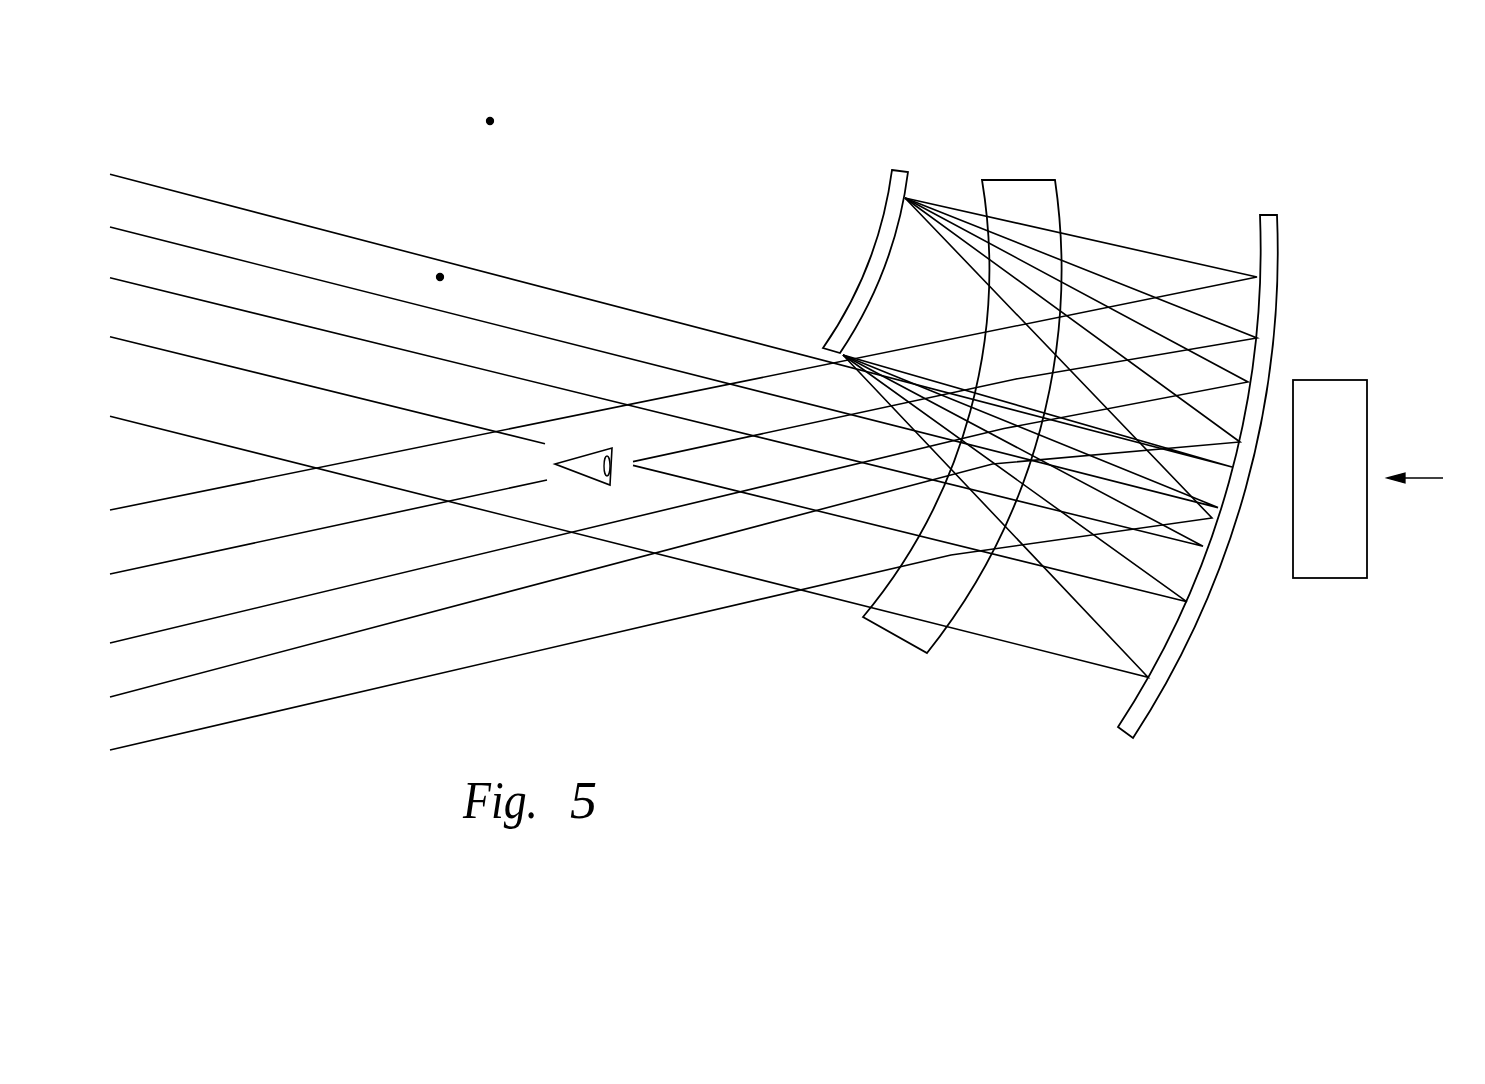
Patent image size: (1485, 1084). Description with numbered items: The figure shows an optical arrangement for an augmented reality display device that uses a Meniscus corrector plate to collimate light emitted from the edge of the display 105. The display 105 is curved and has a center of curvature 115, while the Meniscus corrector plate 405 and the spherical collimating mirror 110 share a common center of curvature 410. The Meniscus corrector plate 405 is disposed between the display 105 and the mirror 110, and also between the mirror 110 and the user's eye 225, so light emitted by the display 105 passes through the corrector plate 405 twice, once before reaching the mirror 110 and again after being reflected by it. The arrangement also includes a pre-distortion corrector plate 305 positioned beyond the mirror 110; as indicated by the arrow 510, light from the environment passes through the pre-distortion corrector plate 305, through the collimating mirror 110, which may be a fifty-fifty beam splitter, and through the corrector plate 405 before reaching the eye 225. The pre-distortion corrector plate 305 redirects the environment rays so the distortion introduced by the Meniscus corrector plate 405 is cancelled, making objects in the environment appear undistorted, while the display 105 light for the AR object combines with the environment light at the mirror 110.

The display 105 is at (905, 145).
The Meniscus corrector plate 405 is at (1000, 178).
The spherical collimating mirror 110 is at (1268, 215).
The pre-distortion corrector plate 305 is at (1312, 378).
The arrow 510 is at (1425, 476).
The eye 225 is at (583, 470).
The center of curvature (COC) 115 is at (490, 118).
The COC 410 is at (440, 274).